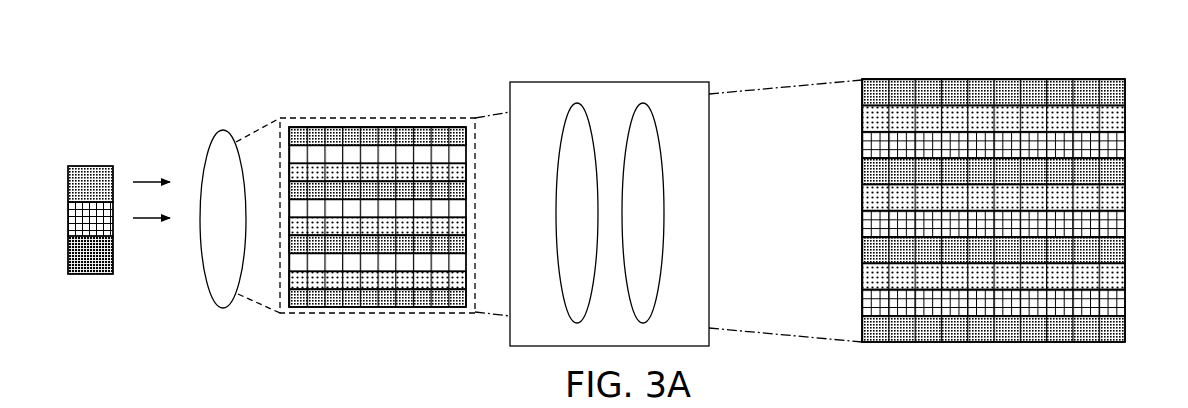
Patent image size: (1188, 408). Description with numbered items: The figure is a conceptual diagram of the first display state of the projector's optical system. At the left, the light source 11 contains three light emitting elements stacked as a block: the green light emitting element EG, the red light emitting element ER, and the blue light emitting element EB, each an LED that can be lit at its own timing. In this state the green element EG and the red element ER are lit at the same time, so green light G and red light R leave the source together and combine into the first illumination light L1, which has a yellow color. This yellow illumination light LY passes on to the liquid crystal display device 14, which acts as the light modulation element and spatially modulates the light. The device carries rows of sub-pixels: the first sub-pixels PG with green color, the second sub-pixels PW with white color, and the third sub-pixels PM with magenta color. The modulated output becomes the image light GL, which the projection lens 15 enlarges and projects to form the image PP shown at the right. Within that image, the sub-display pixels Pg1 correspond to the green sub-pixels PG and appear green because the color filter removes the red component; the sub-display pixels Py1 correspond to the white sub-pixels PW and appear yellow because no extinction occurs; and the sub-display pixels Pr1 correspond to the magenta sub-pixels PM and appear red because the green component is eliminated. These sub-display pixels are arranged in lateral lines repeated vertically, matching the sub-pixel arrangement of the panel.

The light source 11 is at (80, 188).
The first light emitting element EG is at (68, 178).
The second light emitting element ER is at (68, 214).
The third light emitting element EB is at (68, 254).
The green light G is at (151, 172).
The red light R is at (151, 209).
The first illumination light L1 is at (149, 252).
The yellow illumination light LY is at (347, 117).
The liquid crystal display device 14 is at (404, 178).
The first sub-pixels PG is at (302, 243).
The second sub-pixels PW is at (372, 262).
The third sub-pixels PM is at (450, 270).
The projection lens 15 is at (607, 80).
The image light GL is at (480, 314).
The image PP is at (1015, 184).
The sub-display pixels Pg1 is at (885, 165).
The sub-display pixels Py1 is at (990, 185).
The sub-display pixels Pr1 is at (1060, 210).